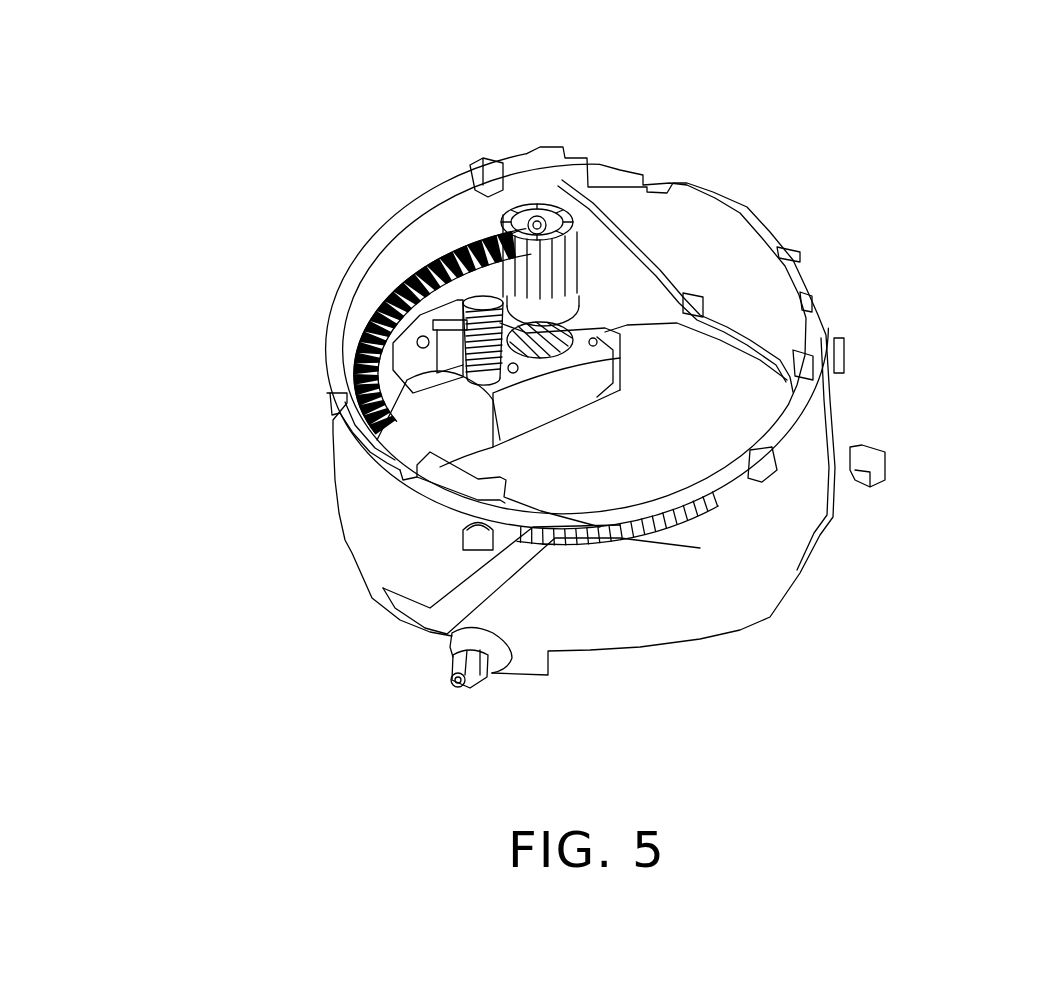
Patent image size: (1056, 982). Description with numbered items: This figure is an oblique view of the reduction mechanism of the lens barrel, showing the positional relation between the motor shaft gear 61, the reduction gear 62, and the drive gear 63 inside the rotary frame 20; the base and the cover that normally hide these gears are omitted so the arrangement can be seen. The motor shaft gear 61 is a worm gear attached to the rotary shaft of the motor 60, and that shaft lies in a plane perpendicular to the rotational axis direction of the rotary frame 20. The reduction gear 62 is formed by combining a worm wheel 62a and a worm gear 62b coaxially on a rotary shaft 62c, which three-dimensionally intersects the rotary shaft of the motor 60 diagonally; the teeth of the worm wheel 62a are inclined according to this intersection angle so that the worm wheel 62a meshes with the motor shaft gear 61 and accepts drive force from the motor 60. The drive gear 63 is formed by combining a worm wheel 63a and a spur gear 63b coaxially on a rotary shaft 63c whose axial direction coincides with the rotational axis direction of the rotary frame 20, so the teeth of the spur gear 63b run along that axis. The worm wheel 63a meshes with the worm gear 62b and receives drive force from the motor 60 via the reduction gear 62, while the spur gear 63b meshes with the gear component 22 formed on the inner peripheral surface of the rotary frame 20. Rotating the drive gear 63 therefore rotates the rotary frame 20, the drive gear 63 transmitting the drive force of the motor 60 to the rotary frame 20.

The rotary frame 20 is at (895, 329).
The gear component 22 is at (365, 375).
The motor 60 is at (453, 410).
The motor shaft gear 61 is at (455, 372).
The reduction gear 62 is at (326, 269).
The worm wheel 62a is at (340, 279).
The worm gear 62b is at (470, 303).
The rotary shaft 62c is at (460, 322).
The drive gear 63 is at (683, 203).
The worm wheel 63a is at (577, 323).
The spur gear 63b is at (568, 240).
The rotary shaft 63c is at (537, 222).